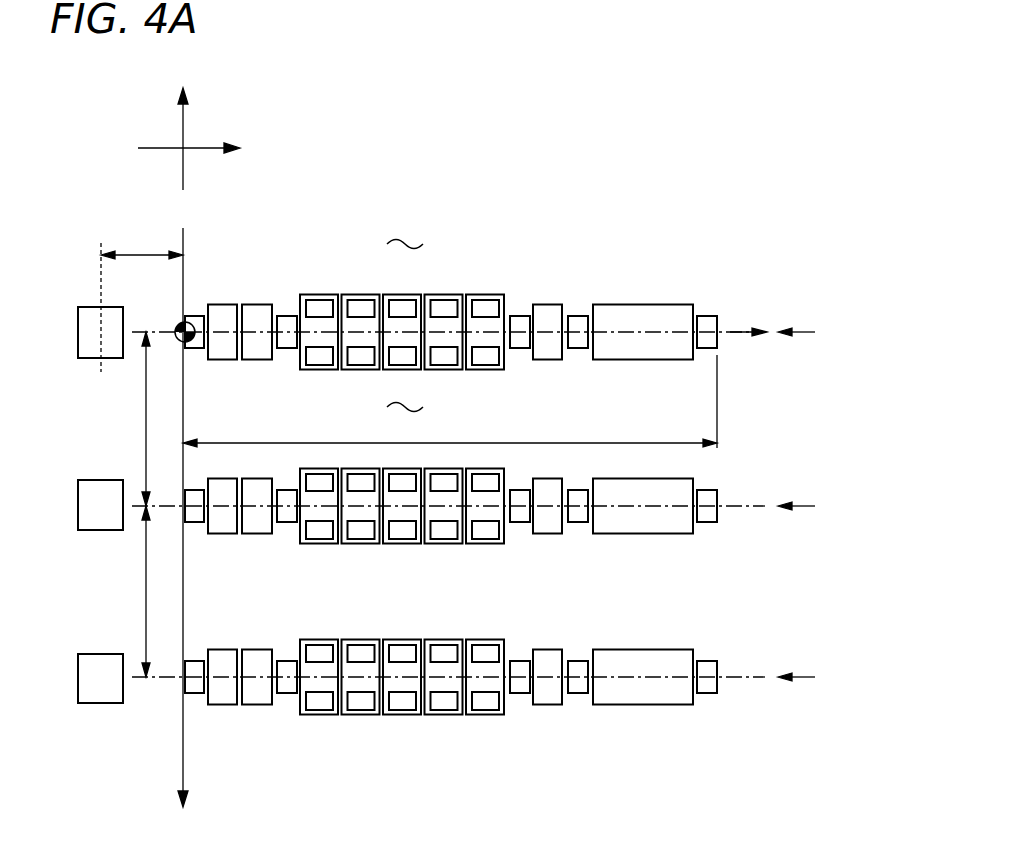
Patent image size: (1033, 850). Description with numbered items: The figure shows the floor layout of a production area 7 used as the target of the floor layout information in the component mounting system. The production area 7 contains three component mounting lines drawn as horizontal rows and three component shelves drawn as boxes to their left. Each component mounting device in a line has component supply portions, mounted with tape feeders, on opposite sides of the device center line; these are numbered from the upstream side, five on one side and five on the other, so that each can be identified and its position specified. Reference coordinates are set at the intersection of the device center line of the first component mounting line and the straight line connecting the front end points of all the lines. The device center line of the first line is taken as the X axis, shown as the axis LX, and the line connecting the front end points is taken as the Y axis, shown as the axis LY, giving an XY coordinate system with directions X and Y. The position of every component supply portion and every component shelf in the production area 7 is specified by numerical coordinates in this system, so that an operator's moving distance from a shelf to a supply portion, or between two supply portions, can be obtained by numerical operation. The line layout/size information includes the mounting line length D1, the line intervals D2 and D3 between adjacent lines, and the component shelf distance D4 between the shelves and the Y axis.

The production area 7 is at (465, 112).
The X axis LX is at (732, 330).
The Y axis LY is at (185, 752).
The mounting line length D1 is at (450, 401).
The line interval D2 is at (131, 419).
The line interval D3 is at (131, 591).
The component shelf distance D4 is at (142, 243).
The X axis direction X is at (201, 150).
The Y axis direction Y is at (181, 127).